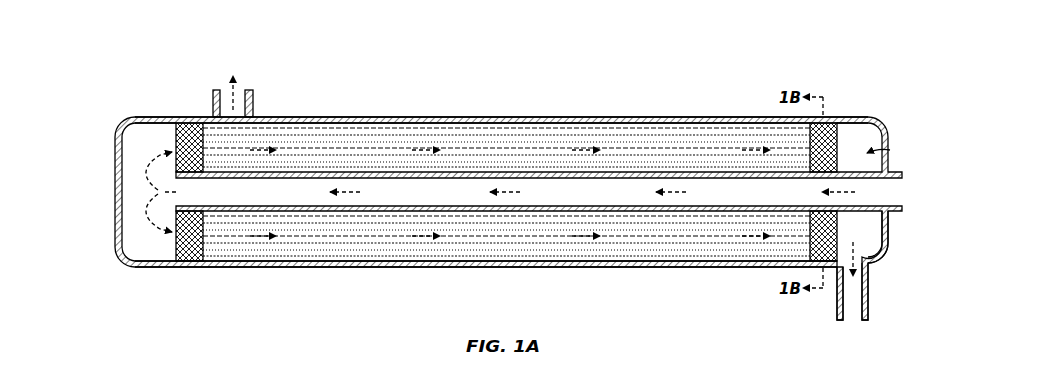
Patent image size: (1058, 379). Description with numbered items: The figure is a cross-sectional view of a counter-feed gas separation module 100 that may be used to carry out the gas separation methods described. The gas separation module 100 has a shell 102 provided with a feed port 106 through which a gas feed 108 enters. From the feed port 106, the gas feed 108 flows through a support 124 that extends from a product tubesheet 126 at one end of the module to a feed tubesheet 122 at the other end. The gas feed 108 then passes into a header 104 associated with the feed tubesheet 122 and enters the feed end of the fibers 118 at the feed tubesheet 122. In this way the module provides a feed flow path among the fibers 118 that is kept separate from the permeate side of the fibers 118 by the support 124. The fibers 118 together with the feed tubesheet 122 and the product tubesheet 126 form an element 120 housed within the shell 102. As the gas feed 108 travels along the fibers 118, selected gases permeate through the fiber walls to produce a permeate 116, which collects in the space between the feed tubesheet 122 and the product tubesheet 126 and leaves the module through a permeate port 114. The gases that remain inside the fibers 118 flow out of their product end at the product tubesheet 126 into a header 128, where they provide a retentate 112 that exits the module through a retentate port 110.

The gas separation module 100 is at (130, 70).
The shell 102 is at (500, 118).
The header 104 is at (142, 192).
The feed port 106 is at (893, 212).
The gas feed 108 is at (853, 196).
The retentate port 110 is at (869, 293).
The retentate 112 is at (856, 250).
The permeate port 114 is at (253, 101).
The permeate 116 is at (233, 82).
The fibers 118 is at (380, 138).
The element 120 is at (172, 137).
The feed tubesheet 122 is at (175, 246).
The support 124 is at (730, 184).
The product tubesheet 126 is at (836, 132).
The header 128 is at (890, 150).